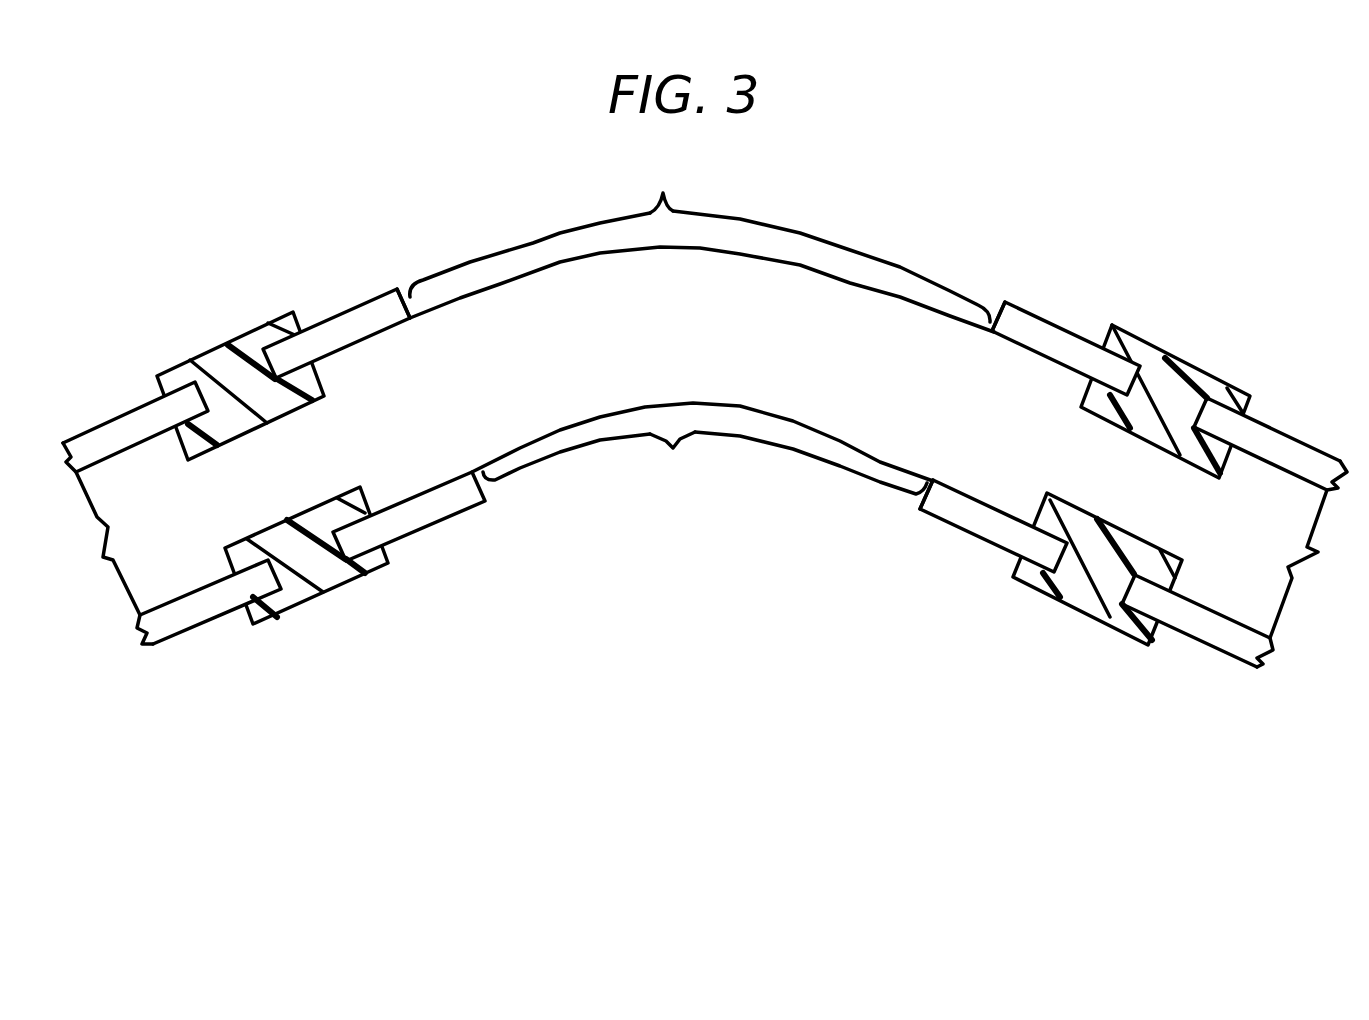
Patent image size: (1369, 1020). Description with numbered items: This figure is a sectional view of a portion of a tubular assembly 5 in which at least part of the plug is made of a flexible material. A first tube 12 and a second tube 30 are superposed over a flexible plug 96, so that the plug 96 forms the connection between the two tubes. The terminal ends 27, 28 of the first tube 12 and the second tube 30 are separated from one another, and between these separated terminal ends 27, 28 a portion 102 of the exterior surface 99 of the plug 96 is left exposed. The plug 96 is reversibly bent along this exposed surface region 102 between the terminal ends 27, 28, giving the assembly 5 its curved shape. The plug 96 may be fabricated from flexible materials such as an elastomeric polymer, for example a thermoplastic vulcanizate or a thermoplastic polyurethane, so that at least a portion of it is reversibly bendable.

The tubular assembly 5 is at (697, 449).
The first tube 12 is at (136, 416).
The terminal end of first tube 27 is at (410, 296).
The terminal end of second tube 28 is at (990, 320).
The second tube 30 is at (1048, 327).
The flexible plug 96 is at (123, 508).
The exterior surface of plug 99 is at (682, 249).
The exposed surface region of plug 102 is at (668, 322).